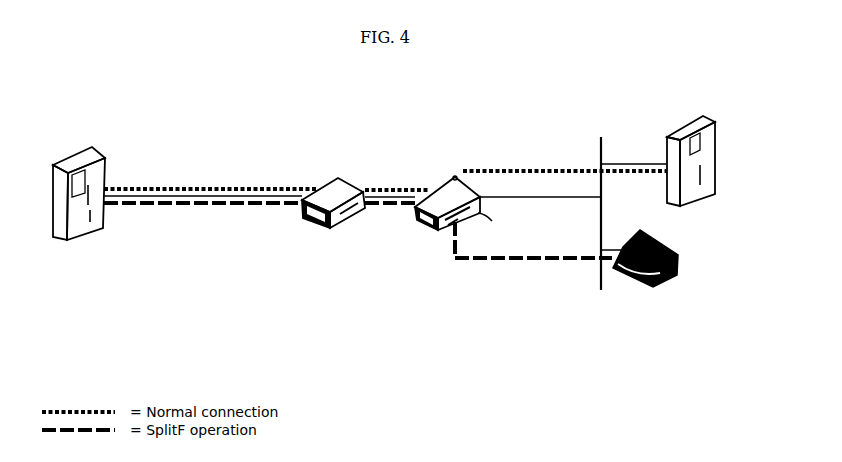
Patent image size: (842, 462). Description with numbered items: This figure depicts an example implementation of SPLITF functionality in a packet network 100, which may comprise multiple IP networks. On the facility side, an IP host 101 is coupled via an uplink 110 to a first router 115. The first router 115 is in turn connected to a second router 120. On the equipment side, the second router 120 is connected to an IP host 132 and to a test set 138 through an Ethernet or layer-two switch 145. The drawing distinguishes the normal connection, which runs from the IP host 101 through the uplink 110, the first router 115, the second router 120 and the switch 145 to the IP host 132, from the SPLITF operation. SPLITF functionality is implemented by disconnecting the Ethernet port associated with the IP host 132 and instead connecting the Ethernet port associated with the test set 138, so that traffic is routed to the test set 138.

The packet network 100 is at (418, 93).
The IP host 101 is at (76, 231).
The uplink 110 is at (185, 185).
The first router 115 is at (338, 228).
The second router 120 is at (420, 226).
The IP host 132 is at (707, 164).
The test set 138 is at (678, 268).
The Ethernet or layer 2 switch 145 is at (603, 226).